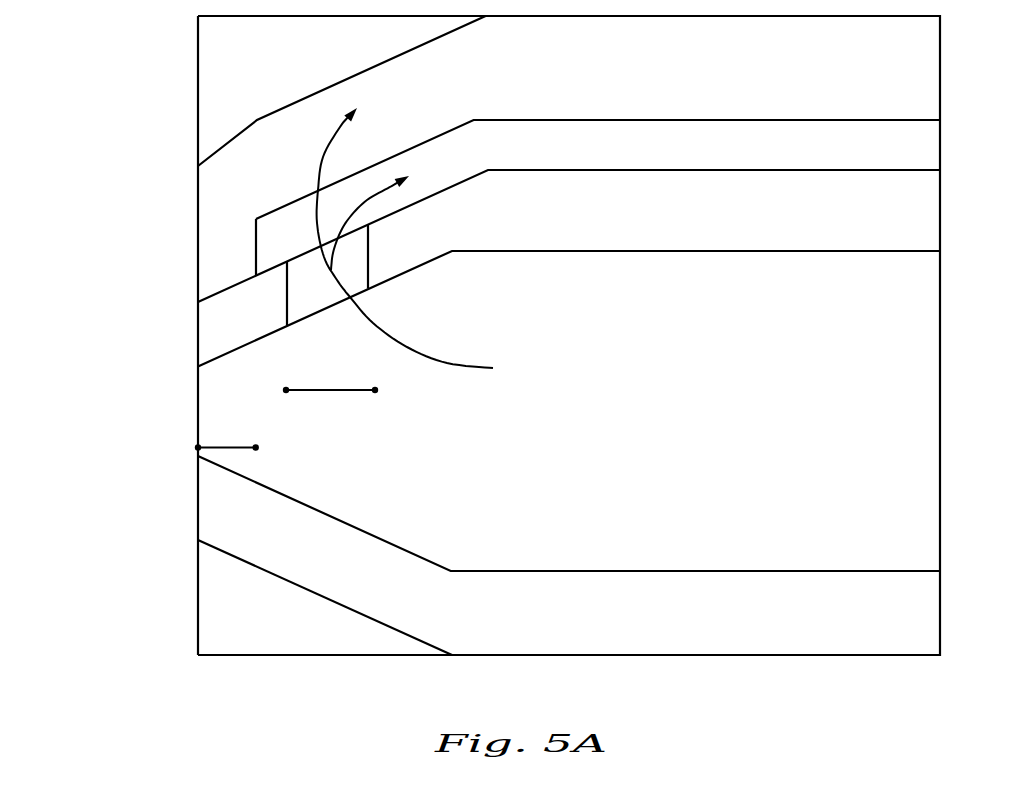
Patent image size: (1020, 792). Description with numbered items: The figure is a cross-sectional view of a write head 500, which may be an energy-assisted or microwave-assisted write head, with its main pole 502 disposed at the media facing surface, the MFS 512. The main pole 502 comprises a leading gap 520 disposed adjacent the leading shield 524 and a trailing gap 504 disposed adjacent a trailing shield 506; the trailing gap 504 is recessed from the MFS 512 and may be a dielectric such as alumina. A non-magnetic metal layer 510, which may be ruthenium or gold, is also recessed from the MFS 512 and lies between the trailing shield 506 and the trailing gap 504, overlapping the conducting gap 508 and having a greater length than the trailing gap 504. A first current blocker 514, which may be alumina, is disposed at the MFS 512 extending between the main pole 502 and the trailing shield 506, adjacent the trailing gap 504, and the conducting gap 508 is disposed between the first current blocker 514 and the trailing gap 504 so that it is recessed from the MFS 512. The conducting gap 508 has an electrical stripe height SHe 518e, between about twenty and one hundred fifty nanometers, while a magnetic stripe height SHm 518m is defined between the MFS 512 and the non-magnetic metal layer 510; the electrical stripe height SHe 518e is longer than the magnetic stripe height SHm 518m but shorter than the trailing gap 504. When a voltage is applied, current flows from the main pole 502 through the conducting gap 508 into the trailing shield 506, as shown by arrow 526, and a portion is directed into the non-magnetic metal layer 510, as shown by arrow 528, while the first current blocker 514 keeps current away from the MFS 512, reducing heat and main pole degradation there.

The write head 500 is at (160, 38).
The main pole 502 is at (899, 420).
The trailing gap 504 is at (899, 224).
The trailing shield 506 is at (899, 83).
The conducting gap 508 is at (312, 300).
The non-magnetic metal layer 510 is at (899, 160).
The MFS 512 is at (168, 451).
The first current blocker 514 is at (208, 332).
The electrical stripe height SHe 518e is at (332, 391).
The magnetic stripe height SHm 518m is at (225, 450).
The leading gap 520 is at (899, 628).
The leading shield 524 is at (274, 629).
The arrow 526 is at (323, 160).
The arrow 528 is at (378, 196).